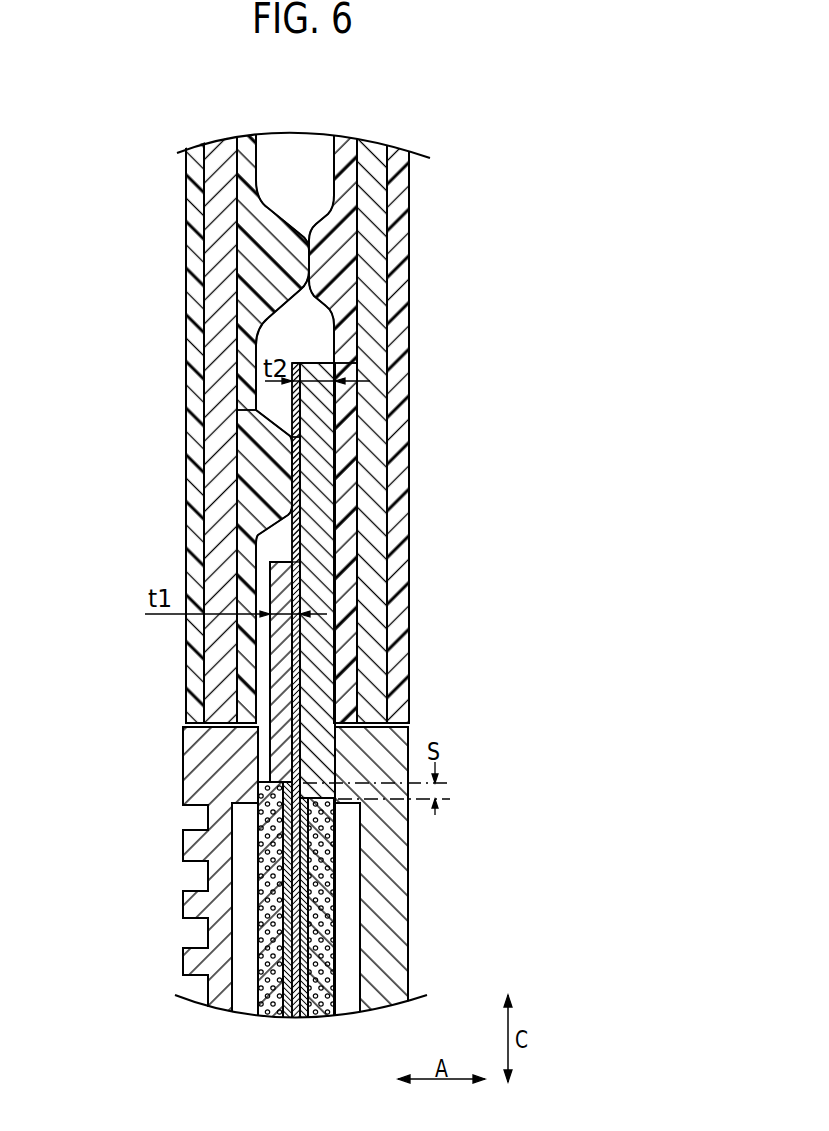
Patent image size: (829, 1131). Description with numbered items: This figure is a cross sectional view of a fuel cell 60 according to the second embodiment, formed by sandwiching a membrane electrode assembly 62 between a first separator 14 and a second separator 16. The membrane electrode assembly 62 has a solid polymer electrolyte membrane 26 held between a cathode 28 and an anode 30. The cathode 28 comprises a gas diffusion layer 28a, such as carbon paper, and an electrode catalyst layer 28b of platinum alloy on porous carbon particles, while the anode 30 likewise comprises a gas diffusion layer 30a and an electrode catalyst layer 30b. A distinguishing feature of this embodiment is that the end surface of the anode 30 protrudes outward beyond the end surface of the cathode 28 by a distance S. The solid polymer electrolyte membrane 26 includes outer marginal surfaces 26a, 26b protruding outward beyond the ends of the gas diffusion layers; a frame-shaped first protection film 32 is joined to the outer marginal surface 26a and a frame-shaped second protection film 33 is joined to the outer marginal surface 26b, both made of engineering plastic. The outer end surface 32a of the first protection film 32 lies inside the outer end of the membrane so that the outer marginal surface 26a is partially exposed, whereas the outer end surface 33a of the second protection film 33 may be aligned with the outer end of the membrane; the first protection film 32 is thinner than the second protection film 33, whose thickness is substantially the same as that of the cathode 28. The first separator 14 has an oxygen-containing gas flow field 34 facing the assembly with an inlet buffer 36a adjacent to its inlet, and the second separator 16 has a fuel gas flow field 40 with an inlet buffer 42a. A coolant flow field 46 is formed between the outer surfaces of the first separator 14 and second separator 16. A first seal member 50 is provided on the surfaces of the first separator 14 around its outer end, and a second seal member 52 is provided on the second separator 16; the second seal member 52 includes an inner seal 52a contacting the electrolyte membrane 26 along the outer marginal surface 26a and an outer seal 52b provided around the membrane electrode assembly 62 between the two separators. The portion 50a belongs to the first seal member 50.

The first separator 14 is at (412, 255).
The second separator 16 is at (183, 303).
The solid polymer electrolyte membrane 26 is at (300, 663).
The outer marginal surface 26a is at (295, 413).
The outer marginal surface 26b is at (296, 472).
The cathode 28 is at (413, 910).
The gas diffusion layer 28a is at (320, 870).
The electrode catalyst layer 28b is at (305, 900).
The anode 30 is at (181, 902).
The gas diffusion layer 30a is at (260, 830).
The electrode catalyst layer 30b is at (287, 865).
The first protection film 32 is at (282, 700).
The outer end surface 32a is at (280, 562).
The second protection film 33 is at (323, 582).
The outer end surface 33a is at (320, 362).
The oxygen-containing gas flow field 34 is at (343, 967).
The inlet buffer 36a is at (343, 932).
The fuel gas flow field 40 is at (247, 967).
The inlet buffer 42a is at (245, 933).
The coolant flow field 46 is at (198, 878).
The first seal member 50 is at (402, 192).
The inner portion of first resin frame member 50a is at (315, 243).
The second seal member 52 is at (195, 213).
The inner seal 52a is at (250, 466).
The outer seal 52b is at (285, 260).
The fuel cell 60 is at (452, 73).
The membrane electrode assembly 62 is at (337, 547).